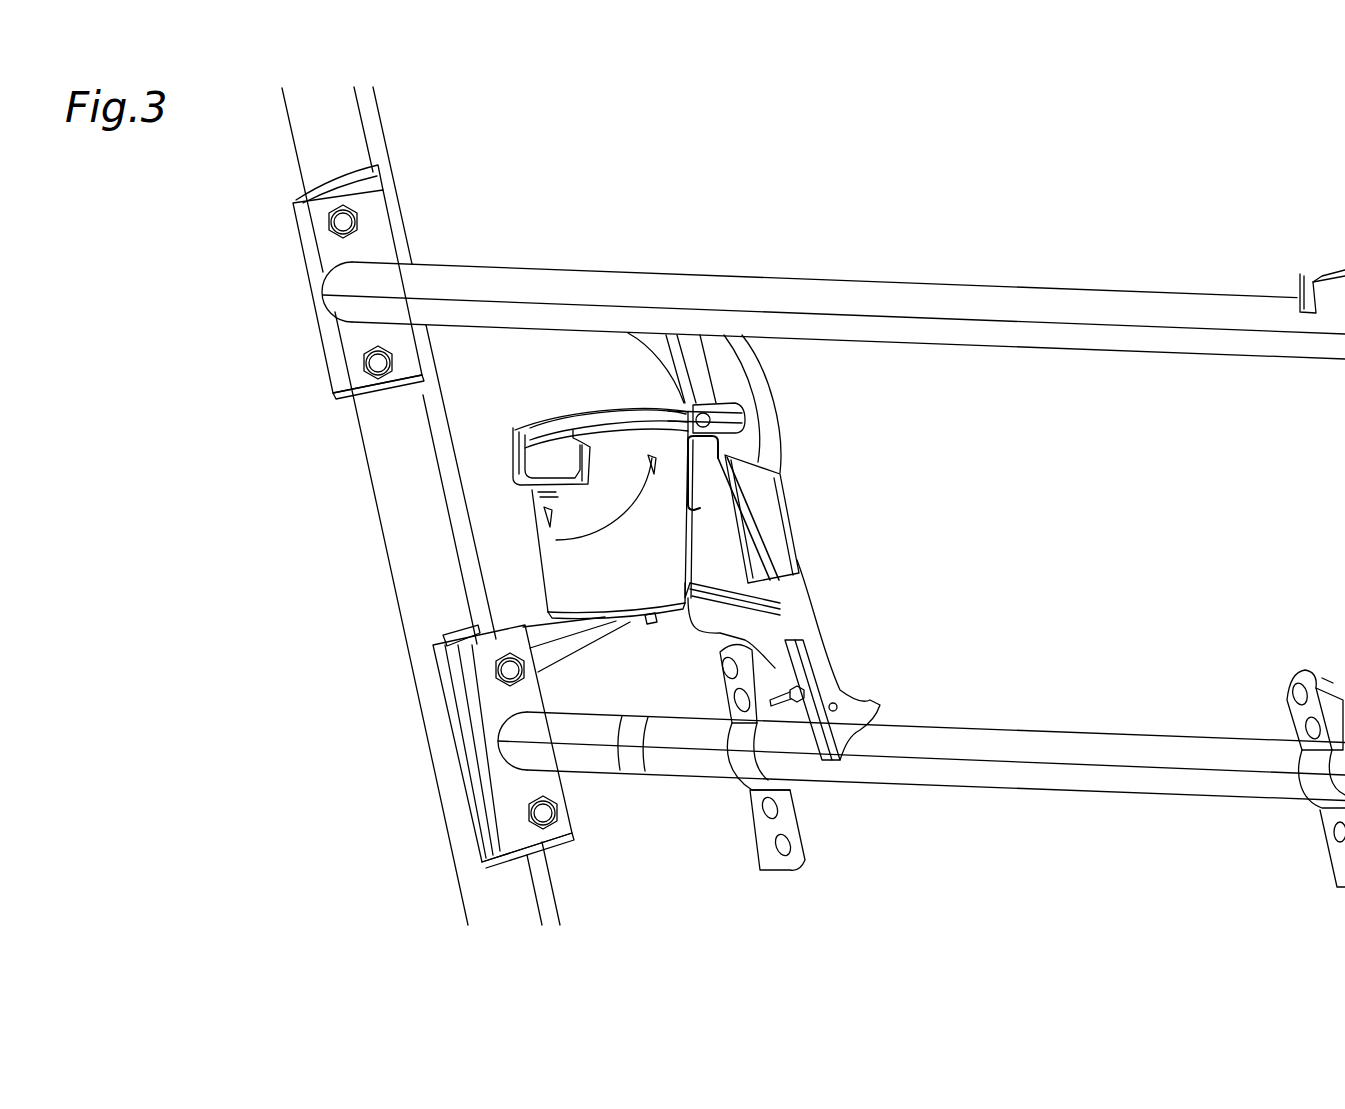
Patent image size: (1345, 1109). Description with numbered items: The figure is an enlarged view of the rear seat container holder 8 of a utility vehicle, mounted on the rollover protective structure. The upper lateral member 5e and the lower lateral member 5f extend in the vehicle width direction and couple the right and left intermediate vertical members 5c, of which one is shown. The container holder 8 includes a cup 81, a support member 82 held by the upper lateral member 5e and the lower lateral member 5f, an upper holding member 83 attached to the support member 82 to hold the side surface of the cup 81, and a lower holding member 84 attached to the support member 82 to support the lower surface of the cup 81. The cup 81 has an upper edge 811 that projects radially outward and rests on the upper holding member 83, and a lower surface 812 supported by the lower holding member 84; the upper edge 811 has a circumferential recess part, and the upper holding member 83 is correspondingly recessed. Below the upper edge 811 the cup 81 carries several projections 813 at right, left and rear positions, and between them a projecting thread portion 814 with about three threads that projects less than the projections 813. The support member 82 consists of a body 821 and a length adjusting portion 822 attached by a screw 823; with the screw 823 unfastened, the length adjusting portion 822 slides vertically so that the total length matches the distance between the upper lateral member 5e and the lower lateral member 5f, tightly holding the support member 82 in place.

The intermediate vertical member 5c is at (345, 128).
The upper lateral member 5e is at (846, 296).
The lower lateral member 5f is at (1018, 752).
The container holder 8 is at (607, 357).
The cup 81 is at (573, 562).
The upper edge 811 is at (602, 436).
The lower surface 812 is at (632, 630).
The projections 813 is at (556, 540).
The projecting thread portion 814 is at (535, 493).
The support member 82 is at (716, 357).
The body 821 is at (763, 505).
The length adjusting portion 822 is at (862, 715).
The screw 823 is at (836, 700).
The upper holding member 83 is at (597, 430).
The lower holding member 84 is at (665, 618).